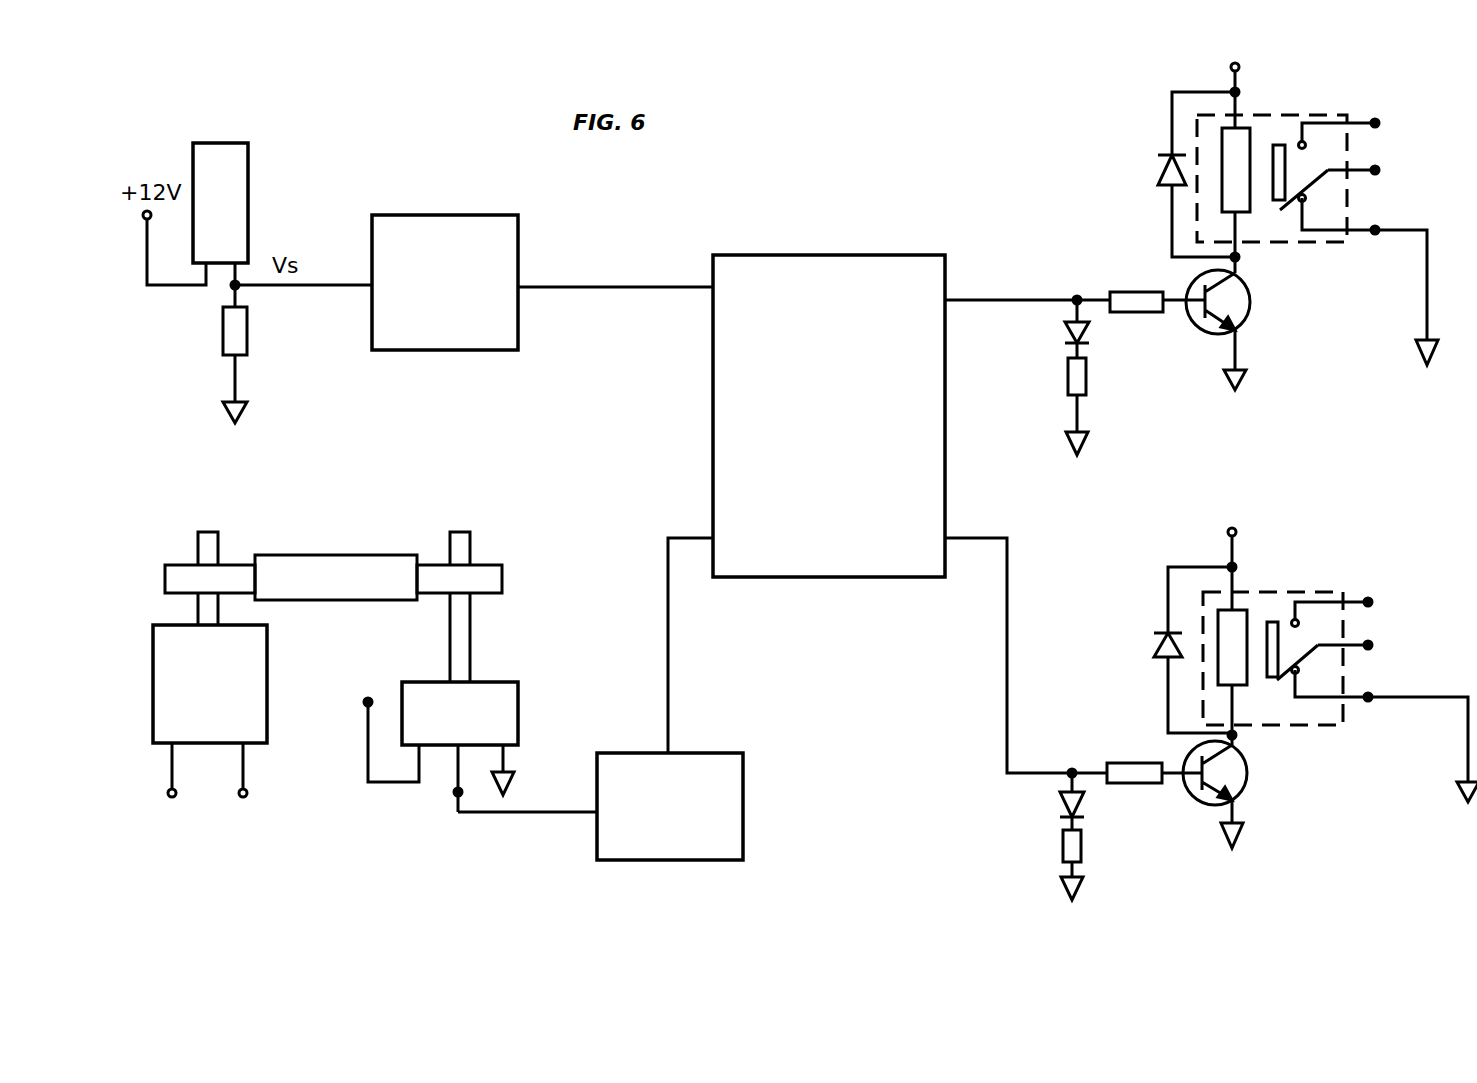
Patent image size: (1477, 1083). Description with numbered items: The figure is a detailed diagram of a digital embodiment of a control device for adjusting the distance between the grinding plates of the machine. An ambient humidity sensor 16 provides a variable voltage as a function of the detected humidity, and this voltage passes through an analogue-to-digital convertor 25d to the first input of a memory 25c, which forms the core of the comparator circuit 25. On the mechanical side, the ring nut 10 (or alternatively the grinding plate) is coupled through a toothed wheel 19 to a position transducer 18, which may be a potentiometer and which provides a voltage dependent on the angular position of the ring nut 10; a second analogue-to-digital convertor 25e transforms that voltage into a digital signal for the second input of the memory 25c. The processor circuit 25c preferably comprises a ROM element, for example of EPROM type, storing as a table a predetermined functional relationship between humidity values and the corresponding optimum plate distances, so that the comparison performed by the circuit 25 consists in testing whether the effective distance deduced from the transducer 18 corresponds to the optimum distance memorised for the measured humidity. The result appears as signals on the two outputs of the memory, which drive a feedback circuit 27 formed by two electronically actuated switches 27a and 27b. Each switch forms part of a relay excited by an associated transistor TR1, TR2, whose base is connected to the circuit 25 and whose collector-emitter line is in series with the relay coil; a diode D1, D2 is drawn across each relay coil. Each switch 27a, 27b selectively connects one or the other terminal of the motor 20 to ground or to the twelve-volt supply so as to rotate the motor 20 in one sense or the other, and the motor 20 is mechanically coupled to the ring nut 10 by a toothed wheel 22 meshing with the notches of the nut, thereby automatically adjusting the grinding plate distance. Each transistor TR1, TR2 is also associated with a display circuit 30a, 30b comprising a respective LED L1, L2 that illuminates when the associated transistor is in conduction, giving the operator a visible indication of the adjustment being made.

The ambient humidity sensor 16 is at (232, 193).
The analogue-to-digital convertor 25d is at (448, 222).
The memory 25c is at (820, 272).
The comparator circuit 25 is at (765, 380).
The analogue-to-digital convertor 25e is at (703, 778).
The toothed wheel 22 is at (178, 580).
The ring nut 10 is at (318, 576).
The toothed wheel 19 is at (488, 580).
The motor 20 is at (253, 700).
The position transducer 18 is at (508, 707).
The feedback circuit 27 is at (1247, 476).
The electronically actuated switch 27a is at (1298, 270).
The electronically actuated switch 27b is at (1327, 752).
The display circuit 30a is at (1164, 374).
The display circuit 30b is at (1155, 820).
The transistor TR1 is at (1229, 330).
The transistor TR2 is at (1227, 794).
The diode D1 is at (1177, 174).
The diode D2 is at (1175, 650).
The LED L1 is at (1061, 377).
The LED L2 is at (1051, 836).